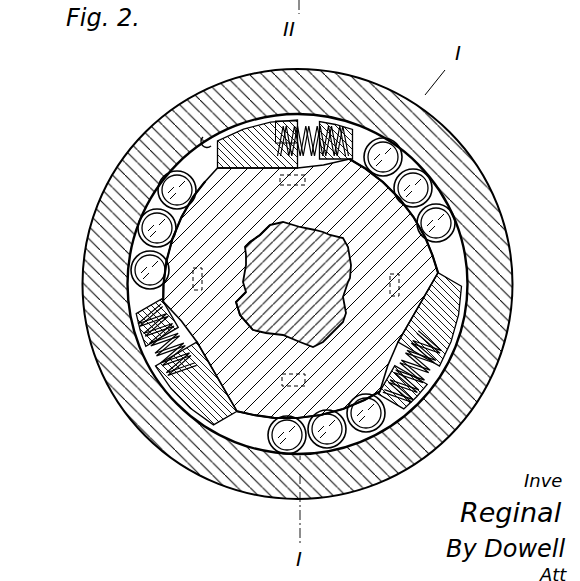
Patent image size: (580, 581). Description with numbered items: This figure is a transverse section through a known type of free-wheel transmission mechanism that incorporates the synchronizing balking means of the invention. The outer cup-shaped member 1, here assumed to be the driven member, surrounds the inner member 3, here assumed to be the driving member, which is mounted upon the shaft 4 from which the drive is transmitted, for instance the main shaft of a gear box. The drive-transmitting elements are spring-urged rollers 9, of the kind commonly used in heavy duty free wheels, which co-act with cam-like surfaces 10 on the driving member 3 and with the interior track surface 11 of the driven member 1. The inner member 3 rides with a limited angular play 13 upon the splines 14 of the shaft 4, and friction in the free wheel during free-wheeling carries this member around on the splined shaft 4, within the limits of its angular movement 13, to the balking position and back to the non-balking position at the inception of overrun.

The outer cup-shaped member 1 is at (487, 313).
The inner member 3 is at (187, 227).
The shaft 4 is at (322, 268).
The spring-urged rollers 9 is at (413, 185).
The cam-like surfaces 10 is at (458, 245).
The interior track surface 11 is at (192, 137).
The angular play 13 is at (250, 247).
The splines 14 is at (252, 322).